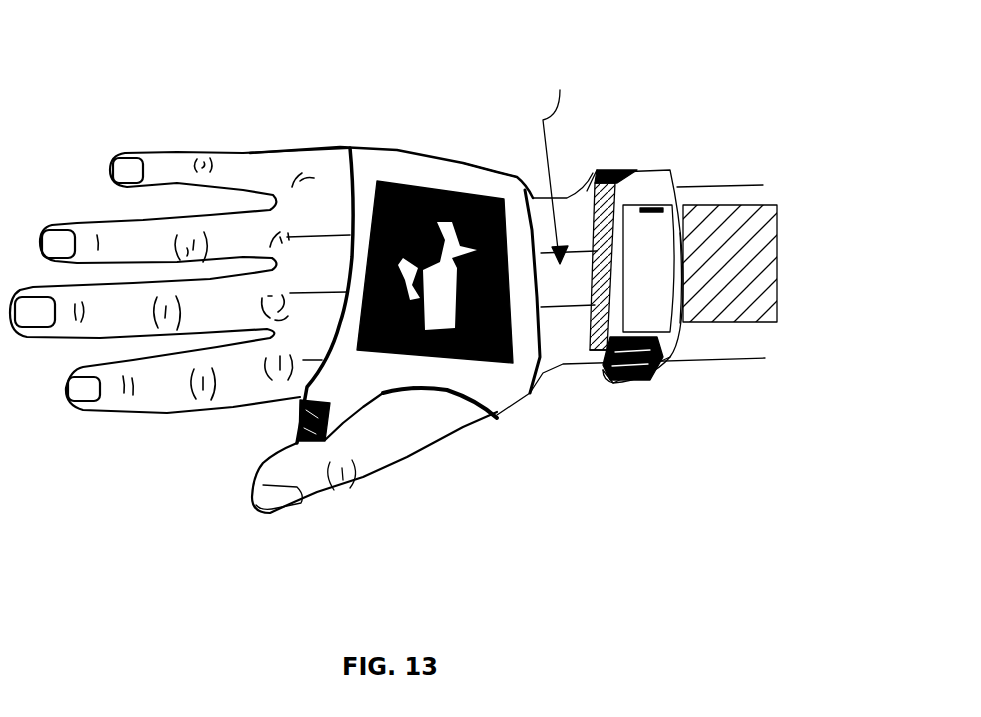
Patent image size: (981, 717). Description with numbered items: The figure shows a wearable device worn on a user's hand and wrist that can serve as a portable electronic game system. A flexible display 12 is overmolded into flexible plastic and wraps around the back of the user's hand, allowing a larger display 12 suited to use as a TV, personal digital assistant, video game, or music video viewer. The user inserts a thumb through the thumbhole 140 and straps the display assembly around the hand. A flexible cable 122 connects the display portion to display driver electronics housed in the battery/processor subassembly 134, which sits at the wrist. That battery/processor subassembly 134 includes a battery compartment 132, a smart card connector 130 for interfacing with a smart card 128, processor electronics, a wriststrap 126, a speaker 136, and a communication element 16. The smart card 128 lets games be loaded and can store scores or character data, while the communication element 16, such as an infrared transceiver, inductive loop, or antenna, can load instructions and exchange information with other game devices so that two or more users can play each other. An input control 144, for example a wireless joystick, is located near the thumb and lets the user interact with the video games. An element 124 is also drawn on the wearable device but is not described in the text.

The display screen 12 is at (462, 190).
The glove 122 is at (511, 188).
The hinge strip 124 is at (609, 158).
The wrist unit 126 is at (656, 188).
The wrist band 128 is at (719, 202).
The housing edge 130 is at (684, 340).
The glove portion 132 is at (330, 533).
The wrist module 134 is at (567, 527).
The connector 136 is at (634, 390).
The controller 16 is at (597, 335).
The glove seam 140 is at (451, 409).
The thumb strap 144 is at (280, 430).